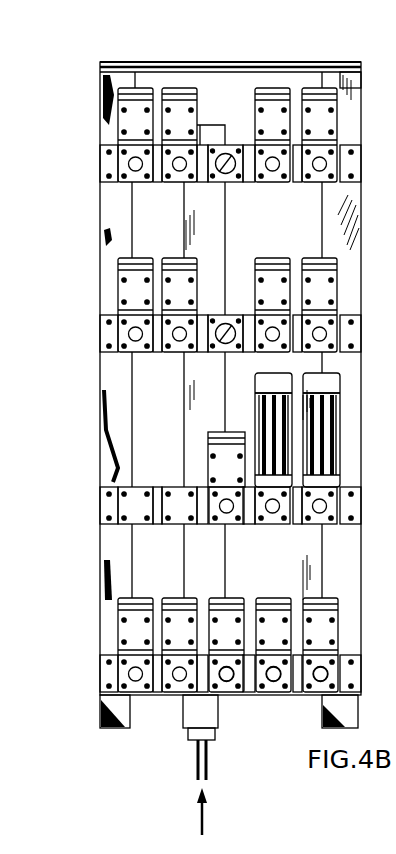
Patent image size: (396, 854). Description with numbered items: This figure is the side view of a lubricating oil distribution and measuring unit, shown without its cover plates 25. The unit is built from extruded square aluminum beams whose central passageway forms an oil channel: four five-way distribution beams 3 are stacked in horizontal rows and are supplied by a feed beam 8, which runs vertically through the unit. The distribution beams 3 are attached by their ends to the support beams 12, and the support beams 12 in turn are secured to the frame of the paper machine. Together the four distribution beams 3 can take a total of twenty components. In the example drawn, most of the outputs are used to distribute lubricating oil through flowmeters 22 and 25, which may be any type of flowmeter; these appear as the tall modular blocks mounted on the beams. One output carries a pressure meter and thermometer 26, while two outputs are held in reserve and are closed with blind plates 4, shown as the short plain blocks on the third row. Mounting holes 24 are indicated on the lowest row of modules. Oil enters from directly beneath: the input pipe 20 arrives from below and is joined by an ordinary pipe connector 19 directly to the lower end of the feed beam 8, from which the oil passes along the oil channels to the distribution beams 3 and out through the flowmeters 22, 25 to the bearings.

The distribution beam 3 is at (100, 160).
The blind plate 4 is at (133, 513).
The feed beam 8 is at (218, 416).
The support beam 12 is at (123, 551).
The pipe connector 19 is at (188, 736).
The input pipe 20 is at (210, 764).
The flowmeter 22 is at (272, 183).
The mounting hole 24 is at (316, 682).
The flowmeter 25 is at (222, 63).
The pressure meter and thermometer 26 is at (234, 248).